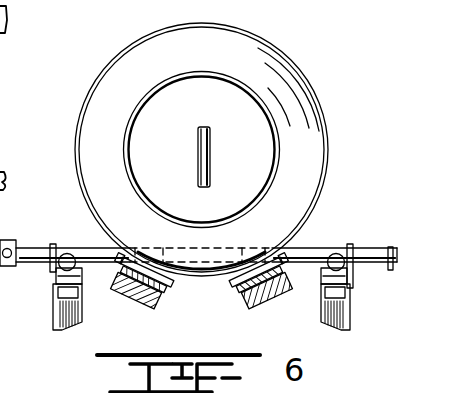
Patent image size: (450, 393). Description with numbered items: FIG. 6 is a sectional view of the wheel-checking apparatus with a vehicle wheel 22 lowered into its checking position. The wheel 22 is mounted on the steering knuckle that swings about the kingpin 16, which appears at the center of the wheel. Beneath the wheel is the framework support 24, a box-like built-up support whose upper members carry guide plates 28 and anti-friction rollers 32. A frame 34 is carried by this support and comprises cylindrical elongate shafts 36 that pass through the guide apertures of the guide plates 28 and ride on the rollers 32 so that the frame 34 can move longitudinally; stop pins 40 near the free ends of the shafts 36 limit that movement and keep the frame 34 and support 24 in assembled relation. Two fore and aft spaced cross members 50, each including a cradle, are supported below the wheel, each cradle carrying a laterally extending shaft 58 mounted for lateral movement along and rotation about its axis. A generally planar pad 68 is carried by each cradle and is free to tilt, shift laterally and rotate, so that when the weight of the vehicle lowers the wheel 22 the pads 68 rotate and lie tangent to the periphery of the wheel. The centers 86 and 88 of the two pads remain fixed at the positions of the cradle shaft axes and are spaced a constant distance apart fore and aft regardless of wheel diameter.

The kingpin 16 is at (213, 141).
The wheel 22 is at (313, 90).
The framework support 24 is at (350, 316).
The guide plate 28 is at (353, 254).
The anti-friction roller 32 is at (80, 240).
The frame 34 is at (40, 273).
The cylindrical elongate shaft 36 is at (23, 248).
The stop pin 40 is at (393, 268).
The cross member 50 is at (147, 320).
The laterally extending shaft 58 is at (13, 102).
The pad 68 is at (232, 284).
The pad center 86 is at (152, 273).
The pad center 88 is at (247, 285).